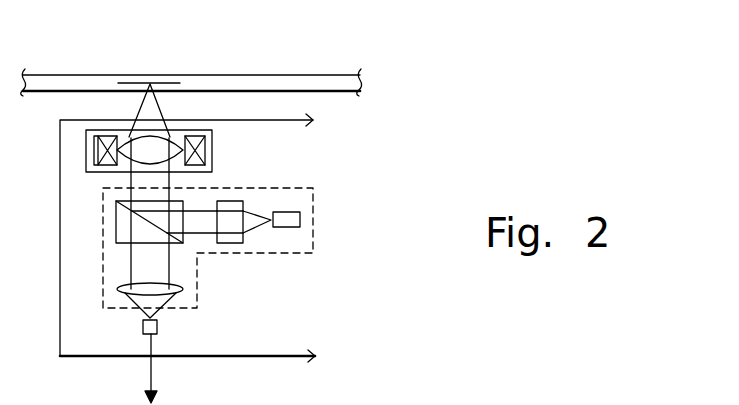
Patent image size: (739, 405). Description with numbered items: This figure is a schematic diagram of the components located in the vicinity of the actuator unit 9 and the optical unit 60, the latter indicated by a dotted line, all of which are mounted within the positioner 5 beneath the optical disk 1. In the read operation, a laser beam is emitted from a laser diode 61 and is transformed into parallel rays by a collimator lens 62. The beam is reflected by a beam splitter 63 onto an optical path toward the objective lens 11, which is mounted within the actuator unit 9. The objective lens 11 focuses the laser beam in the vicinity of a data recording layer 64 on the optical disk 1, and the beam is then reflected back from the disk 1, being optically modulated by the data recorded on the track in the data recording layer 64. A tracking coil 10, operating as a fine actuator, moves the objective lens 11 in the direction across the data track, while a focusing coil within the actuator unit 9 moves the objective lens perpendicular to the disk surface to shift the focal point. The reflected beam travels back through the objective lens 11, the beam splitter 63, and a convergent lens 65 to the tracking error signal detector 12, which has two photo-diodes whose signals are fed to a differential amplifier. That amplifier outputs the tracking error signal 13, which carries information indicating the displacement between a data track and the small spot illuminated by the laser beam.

The optical disk 1 is at (42, 93).
The positioner 5 is at (256, 357).
The actuator unit 9 is at (86, 147).
The tracking coil 10 is at (205, 148).
The objective lens 11 is at (155, 143).
The tracking error signal detector 12 is at (147, 328).
The tracking error signal 13 is at (158, 381).
The optical unit 60 is at (103, 191).
The laser diode 61 is at (293, 228).
The collimator lens 62 is at (237, 244).
The beam splitter 63 is at (116, 225).
The data recording layer 64 is at (167, 52).
The convergent lens 65 is at (118, 290).